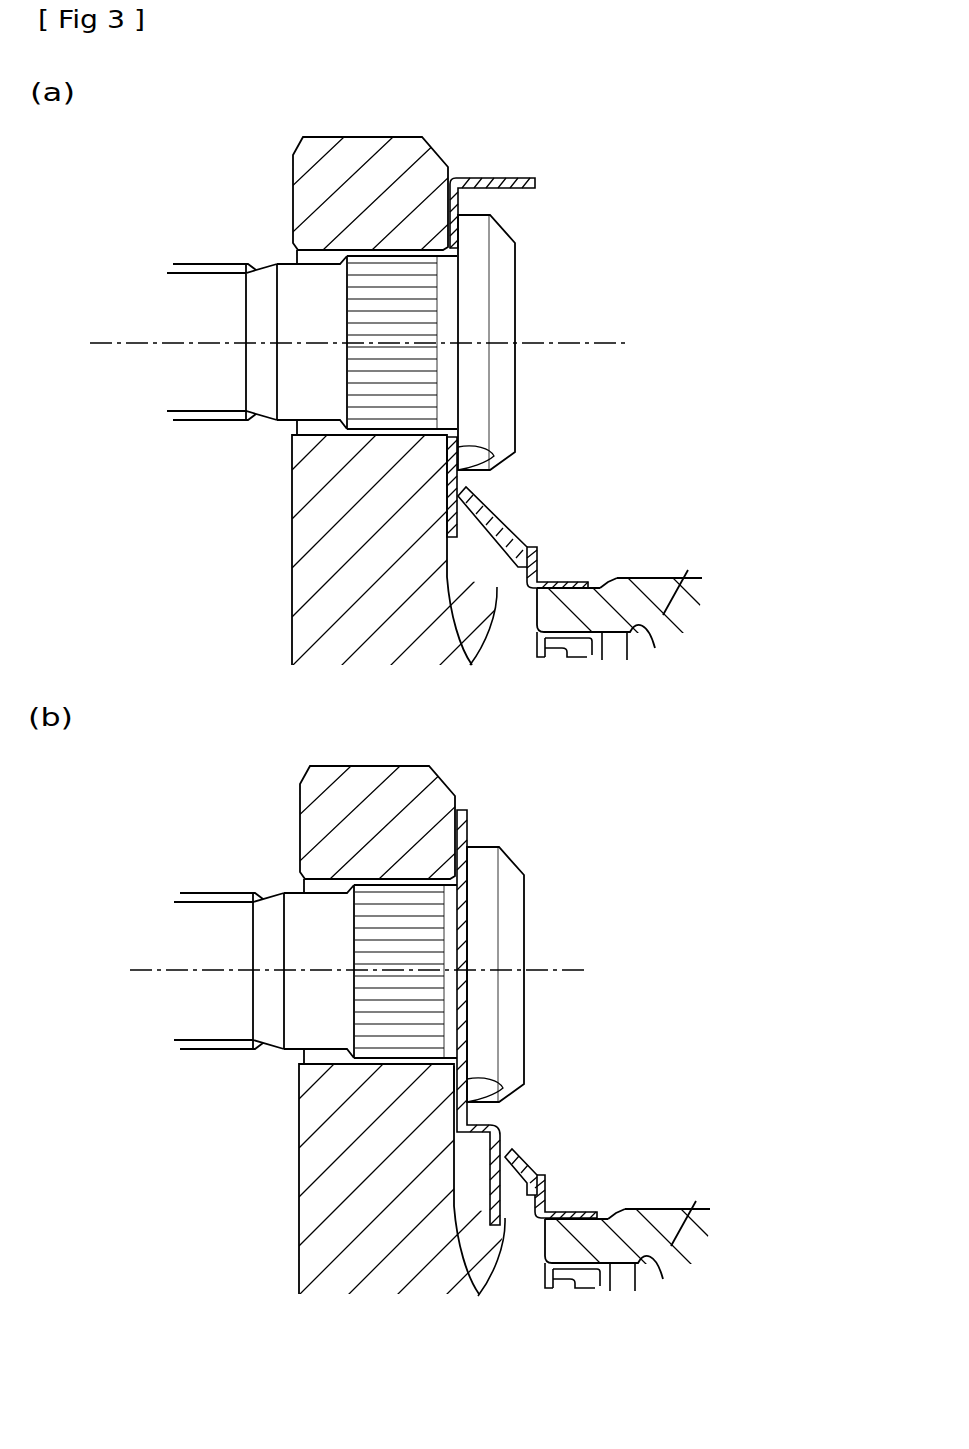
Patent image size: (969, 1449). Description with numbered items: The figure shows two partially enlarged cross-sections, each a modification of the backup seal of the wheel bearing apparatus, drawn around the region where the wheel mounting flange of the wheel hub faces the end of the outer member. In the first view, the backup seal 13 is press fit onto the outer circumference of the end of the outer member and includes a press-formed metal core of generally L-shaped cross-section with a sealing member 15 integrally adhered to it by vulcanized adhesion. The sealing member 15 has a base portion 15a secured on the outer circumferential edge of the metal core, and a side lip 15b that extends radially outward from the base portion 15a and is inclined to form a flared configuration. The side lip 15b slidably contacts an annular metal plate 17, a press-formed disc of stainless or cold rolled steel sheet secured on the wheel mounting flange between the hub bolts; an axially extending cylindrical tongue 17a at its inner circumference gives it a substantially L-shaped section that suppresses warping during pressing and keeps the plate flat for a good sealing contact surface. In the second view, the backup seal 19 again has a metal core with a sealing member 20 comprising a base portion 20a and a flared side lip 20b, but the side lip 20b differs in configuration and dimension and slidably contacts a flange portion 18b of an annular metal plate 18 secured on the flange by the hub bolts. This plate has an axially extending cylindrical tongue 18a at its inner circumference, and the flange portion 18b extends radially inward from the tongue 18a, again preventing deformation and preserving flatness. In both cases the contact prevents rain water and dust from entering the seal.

The backup seal 13 is at (675, 457).
The sealing member 15 is at (558, 500).
The base portion 15a is at (518, 553).
The side lip 15b is at (478, 510).
The annular metal plate 17 is at (462, 206).
The cylindrical tongue 17a is at (490, 177).
The annular metal plate 18 is at (412, 1016).
The cylindrical tongue 18a is at (482, 1134).
The flange portion 18b is at (493, 1182).
The backup seal 19 is at (678, 1098).
The sealing member 20 is at (589, 1135).
The base portion 20a is at (570, 1176).
The side lip 20b is at (506, 1155).